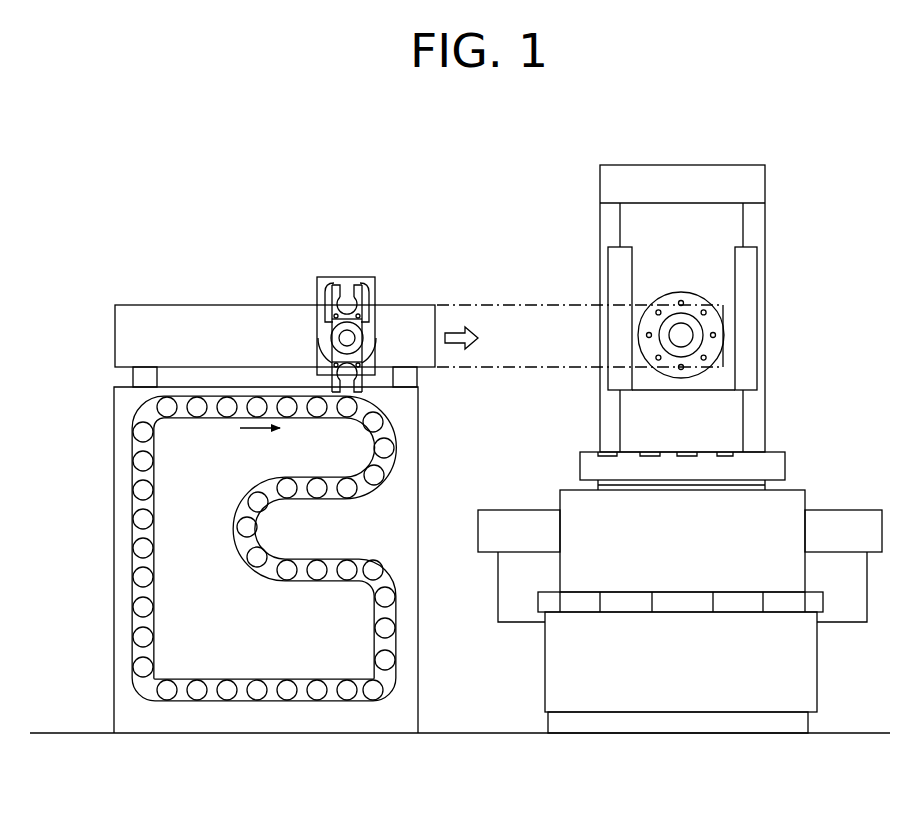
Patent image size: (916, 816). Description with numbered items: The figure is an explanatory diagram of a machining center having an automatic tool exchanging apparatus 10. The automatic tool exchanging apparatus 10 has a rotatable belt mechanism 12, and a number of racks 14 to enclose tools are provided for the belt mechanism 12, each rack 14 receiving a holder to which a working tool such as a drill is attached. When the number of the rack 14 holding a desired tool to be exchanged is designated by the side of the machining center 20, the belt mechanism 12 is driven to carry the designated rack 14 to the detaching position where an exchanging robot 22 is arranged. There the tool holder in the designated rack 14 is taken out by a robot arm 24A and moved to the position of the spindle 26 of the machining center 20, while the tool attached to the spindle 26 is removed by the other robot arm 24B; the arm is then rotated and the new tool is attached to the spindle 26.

The automatic tool exchanging apparatus 10 is at (127, 296).
The belt mechanism 12 is at (127, 473).
The rack 14 is at (345, 413).
The machining center 20 is at (594, 213).
The exchanging robot 22 is at (307, 291).
The robot arm 24A is at (366, 384).
The robot arm 24B is at (340, 292).
The spindle 26 is at (688, 338).